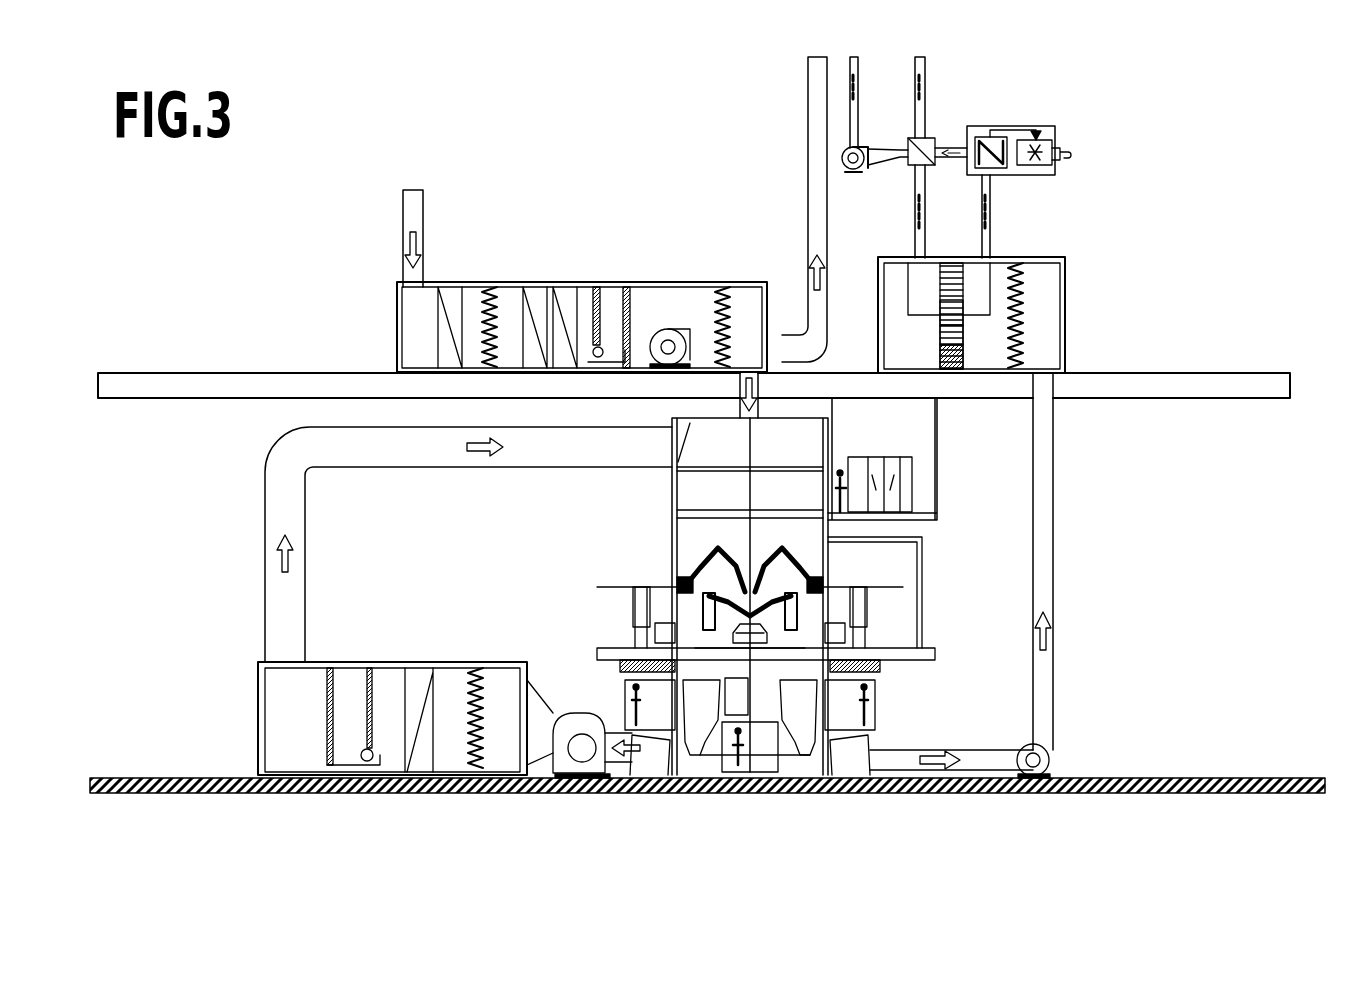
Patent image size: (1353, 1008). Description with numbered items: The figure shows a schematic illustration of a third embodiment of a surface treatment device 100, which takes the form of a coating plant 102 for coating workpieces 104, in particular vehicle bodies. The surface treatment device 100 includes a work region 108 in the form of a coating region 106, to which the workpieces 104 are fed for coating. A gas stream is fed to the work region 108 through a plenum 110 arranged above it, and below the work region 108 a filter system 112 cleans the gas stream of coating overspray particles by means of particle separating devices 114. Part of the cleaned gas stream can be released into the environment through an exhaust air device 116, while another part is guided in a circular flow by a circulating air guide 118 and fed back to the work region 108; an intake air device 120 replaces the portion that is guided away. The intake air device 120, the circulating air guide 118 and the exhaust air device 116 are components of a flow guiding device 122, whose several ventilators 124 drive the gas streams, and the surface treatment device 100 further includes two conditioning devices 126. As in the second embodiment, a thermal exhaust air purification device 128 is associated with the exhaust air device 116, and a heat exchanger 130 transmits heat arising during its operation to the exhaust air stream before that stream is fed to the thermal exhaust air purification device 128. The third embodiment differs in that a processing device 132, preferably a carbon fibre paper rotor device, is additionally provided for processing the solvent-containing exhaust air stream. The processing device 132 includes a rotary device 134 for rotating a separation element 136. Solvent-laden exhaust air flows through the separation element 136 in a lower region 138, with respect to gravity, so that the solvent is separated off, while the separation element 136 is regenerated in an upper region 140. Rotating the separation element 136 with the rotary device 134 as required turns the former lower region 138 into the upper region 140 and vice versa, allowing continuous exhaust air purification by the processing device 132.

The surface treatment device 100 is at (1132, 114).
The coating plant 102 is at (1165, 127).
The workpieces 104 is at (788, 740).
The coating region 106 is at (725, 640).
The work region 108 is at (742, 645).
The plenum 110 is at (828, 426).
The filter system 112 is at (822, 797).
The particle separating devices 114 is at (715, 760).
The exhaust air device 116 is at (817, 133).
The circulating air guide 118 is at (244, 448).
The intake air device 120 is at (412, 213).
The flow guiding device 122 is at (780, 352).
The ventilators 124 is at (668, 345).
The conditioning devices 126 is at (534, 252).
The thermal exhaust air purification device 128 is at (1045, 150).
The heat exchanger 130 is at (992, 140).
The processing device 132 is at (960, 323).
The rotary device 134 is at (960, 295).
The separation element 136 is at (960, 337).
The lower region 138 is at (960, 348).
The upper region 140 is at (1031, 267).